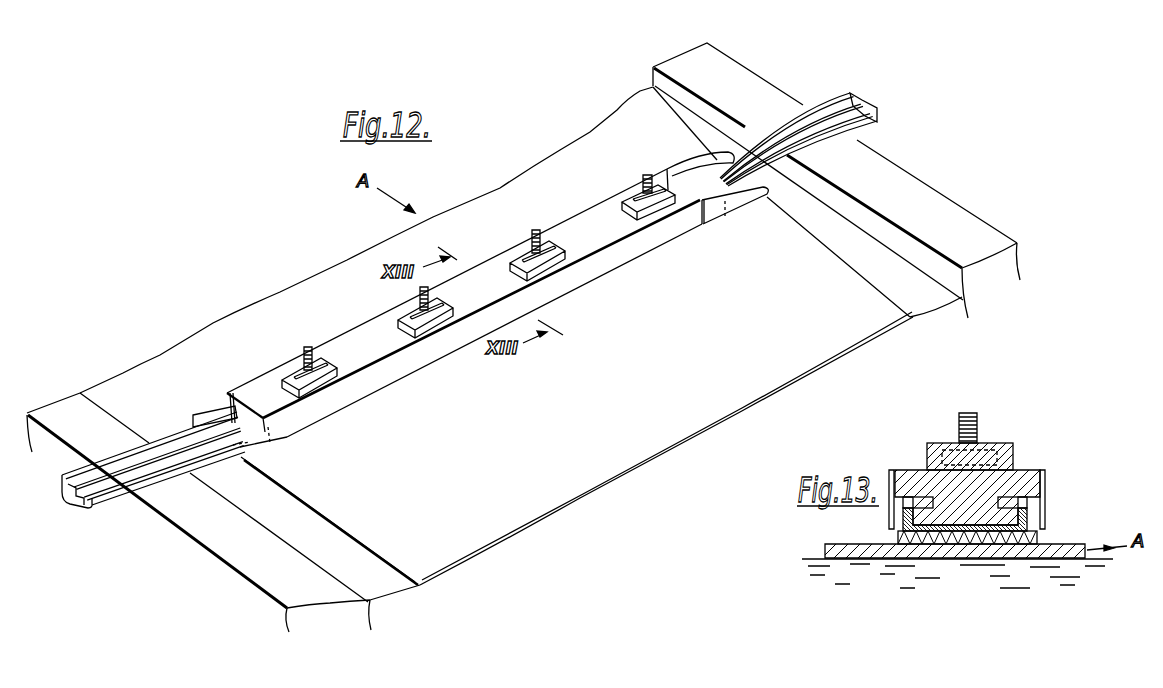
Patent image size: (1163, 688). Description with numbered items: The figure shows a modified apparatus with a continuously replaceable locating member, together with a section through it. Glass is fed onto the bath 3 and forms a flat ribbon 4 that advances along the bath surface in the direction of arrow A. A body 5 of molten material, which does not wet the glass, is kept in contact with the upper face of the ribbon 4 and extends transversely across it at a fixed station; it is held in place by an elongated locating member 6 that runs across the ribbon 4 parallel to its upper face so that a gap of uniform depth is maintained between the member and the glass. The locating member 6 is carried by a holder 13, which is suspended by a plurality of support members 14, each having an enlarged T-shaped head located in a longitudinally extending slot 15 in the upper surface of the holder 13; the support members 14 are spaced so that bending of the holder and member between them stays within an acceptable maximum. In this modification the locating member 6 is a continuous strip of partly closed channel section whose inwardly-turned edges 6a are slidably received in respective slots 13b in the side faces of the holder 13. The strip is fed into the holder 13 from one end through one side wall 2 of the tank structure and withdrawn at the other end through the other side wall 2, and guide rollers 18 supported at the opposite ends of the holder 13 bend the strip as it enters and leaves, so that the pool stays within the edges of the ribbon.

In FIG. 12, the side wall 2 is at (237, 562).
In FIG. 12, the bath 3 is at (521, 343).
In FIG. 13, the bath 3 is at (957, 574).
In FIG. 12, the ribbon 4 is at (577, 448).
In FIG. 13, the ribbon 4 is at (845, 552).
In FIG. 13, the body of molten material 5 is at (1037, 541).
In FIG. 12, the locating member 6 is at (76, 500).
In FIG. 13, the locating member 6 is at (935, 520).
In FIG. 12, the inwardly-turned edges 6a is at (97, 464).
In FIG. 13, the inwardly-turned edges 6a is at (903, 503).
In FIG. 12, the holder 13 is at (648, 250).
In FIG. 13, the holder 13 is at (1010, 478).
In FIG. 12, the slots 13b is at (232, 400).
In FIG. 13, the slots 13b is at (892, 470).
In FIG. 12, the support members 14 is at (310, 347).
In FIG. 13, the support members 14 is at (959, 431).
In FIG. 12, the slots 15 is at (323, 360).
In FIG. 12, the guide rollers 18 is at (193, 414).